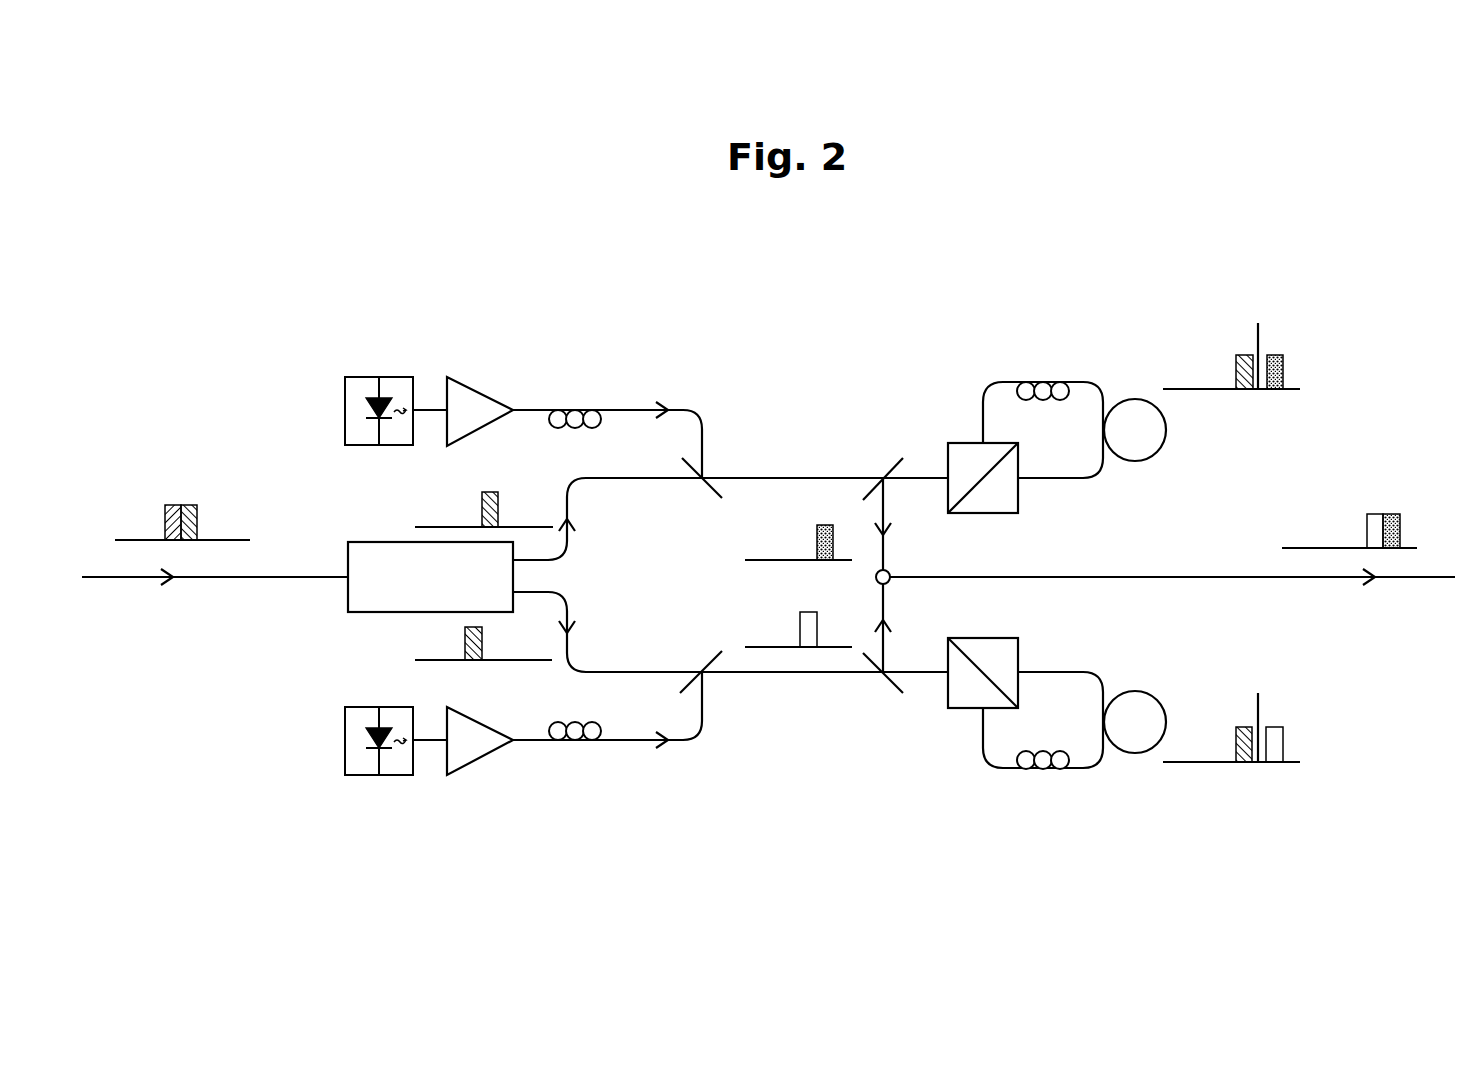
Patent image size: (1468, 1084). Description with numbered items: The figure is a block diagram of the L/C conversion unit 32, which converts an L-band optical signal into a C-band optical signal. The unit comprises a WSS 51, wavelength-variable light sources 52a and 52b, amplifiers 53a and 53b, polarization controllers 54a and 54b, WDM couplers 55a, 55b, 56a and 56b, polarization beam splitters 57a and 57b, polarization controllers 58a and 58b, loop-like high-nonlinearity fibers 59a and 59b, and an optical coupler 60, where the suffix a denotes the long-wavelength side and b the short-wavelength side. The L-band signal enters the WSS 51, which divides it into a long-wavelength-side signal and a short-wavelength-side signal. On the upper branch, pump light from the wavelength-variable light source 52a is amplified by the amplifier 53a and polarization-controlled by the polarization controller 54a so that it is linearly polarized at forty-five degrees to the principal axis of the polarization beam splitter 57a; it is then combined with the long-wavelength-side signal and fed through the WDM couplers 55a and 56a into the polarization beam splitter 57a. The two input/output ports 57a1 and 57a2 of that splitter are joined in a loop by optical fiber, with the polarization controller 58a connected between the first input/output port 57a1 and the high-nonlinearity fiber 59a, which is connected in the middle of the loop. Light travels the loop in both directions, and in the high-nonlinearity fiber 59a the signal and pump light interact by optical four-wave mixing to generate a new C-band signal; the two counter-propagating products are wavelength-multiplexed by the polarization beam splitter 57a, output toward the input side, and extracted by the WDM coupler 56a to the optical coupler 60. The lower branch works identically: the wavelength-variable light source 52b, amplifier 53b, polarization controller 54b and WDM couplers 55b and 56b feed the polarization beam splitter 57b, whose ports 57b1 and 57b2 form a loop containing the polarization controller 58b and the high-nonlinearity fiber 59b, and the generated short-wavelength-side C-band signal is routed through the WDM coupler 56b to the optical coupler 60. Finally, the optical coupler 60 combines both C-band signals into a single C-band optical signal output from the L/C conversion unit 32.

The L/C conversion unit 32 is at (1068, 297).
The WSS 51 is at (370, 540).
The wavelength-variable light source 52a is at (343, 398).
The wavelength-variable light source 52b is at (343, 753).
The amplifier 53a is at (483, 393).
The amplifier 53b is at (482, 760).
The polarization controller 54a is at (575, 428).
The polarization controller 54b is at (575, 723).
The WDM coupler 55a is at (700, 495).
The WDM coupler 55b is at (703, 668).
The WDM coupler 56a is at (878, 476).
The WDM coupler 56b is at (878, 677).
The polarization beam splitter 57a is at (983, 515).
The first input/output port 57a1 is at (982, 442).
The second input/output port 57a2 is at (1022, 480).
The polarization beam splitter 57b is at (983, 638).
The first input/output port 57b1 is at (980, 710).
The second input/output port 57b2 is at (1024, 668).
The polarization controller 58a is at (1043, 401).
The polarization controller 58b is at (1042, 751).
The loop-like high-nonlinearity fiber 59a is at (1120, 398).
The loop-like high-nonlinearity fiber 59b is at (1120, 754).
The optical coupler 60 is at (887, 570).